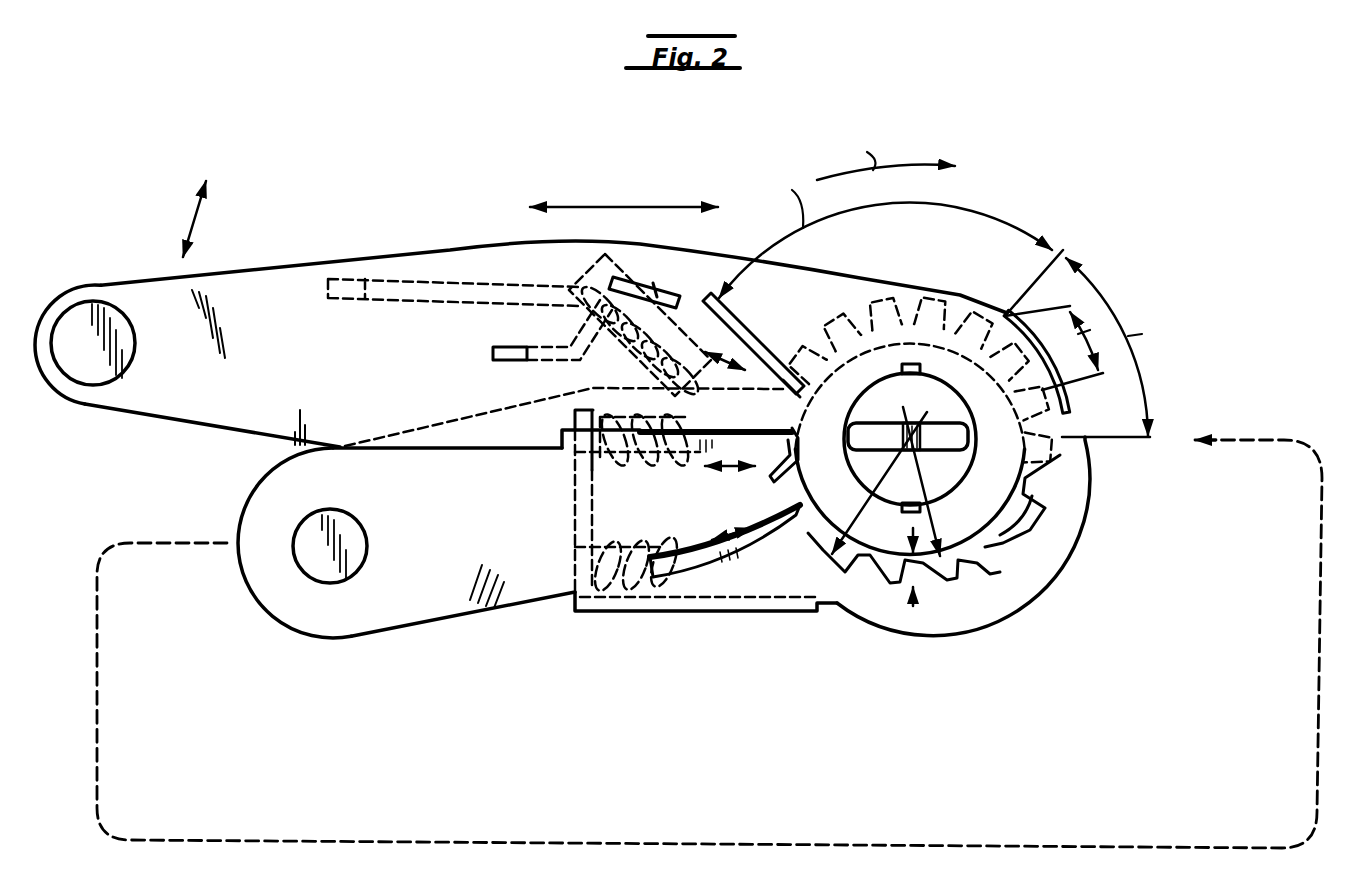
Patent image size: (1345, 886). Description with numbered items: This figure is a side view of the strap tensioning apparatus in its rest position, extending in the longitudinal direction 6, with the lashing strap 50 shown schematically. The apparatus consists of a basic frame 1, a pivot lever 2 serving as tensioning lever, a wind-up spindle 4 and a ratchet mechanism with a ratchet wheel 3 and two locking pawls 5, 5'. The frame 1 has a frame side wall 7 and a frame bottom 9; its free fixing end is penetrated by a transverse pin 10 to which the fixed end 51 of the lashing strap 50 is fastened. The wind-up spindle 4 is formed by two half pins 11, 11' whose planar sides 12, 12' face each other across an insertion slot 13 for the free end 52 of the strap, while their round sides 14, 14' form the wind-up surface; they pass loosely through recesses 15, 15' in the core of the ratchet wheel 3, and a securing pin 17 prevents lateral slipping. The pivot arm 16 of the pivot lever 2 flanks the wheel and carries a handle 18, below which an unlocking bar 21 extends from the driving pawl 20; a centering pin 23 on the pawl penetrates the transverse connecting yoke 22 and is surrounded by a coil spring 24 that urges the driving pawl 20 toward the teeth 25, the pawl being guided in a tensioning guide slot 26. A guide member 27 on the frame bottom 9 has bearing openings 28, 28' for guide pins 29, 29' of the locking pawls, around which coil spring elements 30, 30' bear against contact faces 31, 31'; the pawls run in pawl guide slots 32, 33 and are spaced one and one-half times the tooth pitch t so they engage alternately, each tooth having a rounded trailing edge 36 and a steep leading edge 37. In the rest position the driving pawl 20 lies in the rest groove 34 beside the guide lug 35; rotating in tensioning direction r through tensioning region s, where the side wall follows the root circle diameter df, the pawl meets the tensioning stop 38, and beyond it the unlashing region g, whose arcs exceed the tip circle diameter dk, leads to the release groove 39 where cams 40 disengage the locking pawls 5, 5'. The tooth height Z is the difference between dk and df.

The basic frame 1 is at (432, 614).
The pivot lever 2 is at (272, 262).
The ratchet wheel 3 is at (990, 568).
The wind-up spindle 4 is at (866, 372).
The locking pawl 5 is at (719, 440).
The locking pawl 5' is at (725, 582).
The longitudinal direction 6 is at (643, 207).
The frame side wall 7 is at (868, 602).
The frame bottom 9 is at (695, 612).
The transverse pin 10 is at (336, 576).
The half pin 11 is at (920, 441).
The half pin 11' is at (880, 510).
The planar side 12 is at (938, 430).
The planar side 12' is at (997, 460).
The insertion slot 13 is at (880, 444).
The round side 14 is at (839, 375).
The round side 14' is at (823, 464).
The recess 15 is at (896, 352).
The recess 15' is at (955, 495).
The pivot arm 16 is at (478, 262).
The securing pin 17 is at (922, 368).
The handle 18 is at (86, 300).
The driving pawl 20 is at (768, 347).
The unlocking bar 21 is at (343, 280).
The transverse connecting yoke 22 is at (648, 272).
The centering pin 23 is at (568, 290).
The coil spring 24 is at (700, 272).
The tooth 25 is at (1002, 562).
The tensioning guide slot 26 is at (618, 342).
The guide member 27 is at (573, 500).
The bearing opening 28 is at (601, 460).
The bearing opening 28' is at (580, 537).
The guide pin 29 is at (553, 349).
The guide pin 29' is at (540, 617).
The coil spring element 30 is at (644, 458).
The coil spring element 30' is at (636, 600).
The contact face 31 is at (727, 480).
The contact face 31' is at (707, 523).
The pawl guide slot 32 is at (640, 422).
The pawl guide slot 33 is at (672, 600).
The rest groove 34 is at (790, 410).
The guide lug 35 is at (790, 325).
The rounded trailing edge 36 is at (975, 582).
The steep leading edge 37 is at (1012, 540).
The tensioning stop 38 is at (1003, 311).
The release groove 39 is at (1075, 425).
The cam 40 is at (1052, 482).
The lashing strap 50 is at (362, 838).
The fixed end 51 is at (215, 542).
The free end 52 is at (1232, 438).
The tensioning region s is at (891, 243).
The tensioning direction r is at (886, 155).
The unlashing region g is at (1112, 347).
The tooth pitch t is at (1054, 348).
The tooth height Z is at (915, 604).
The root circle diameter df is at (934, 481).
The tip circle diameter dk is at (856, 495).